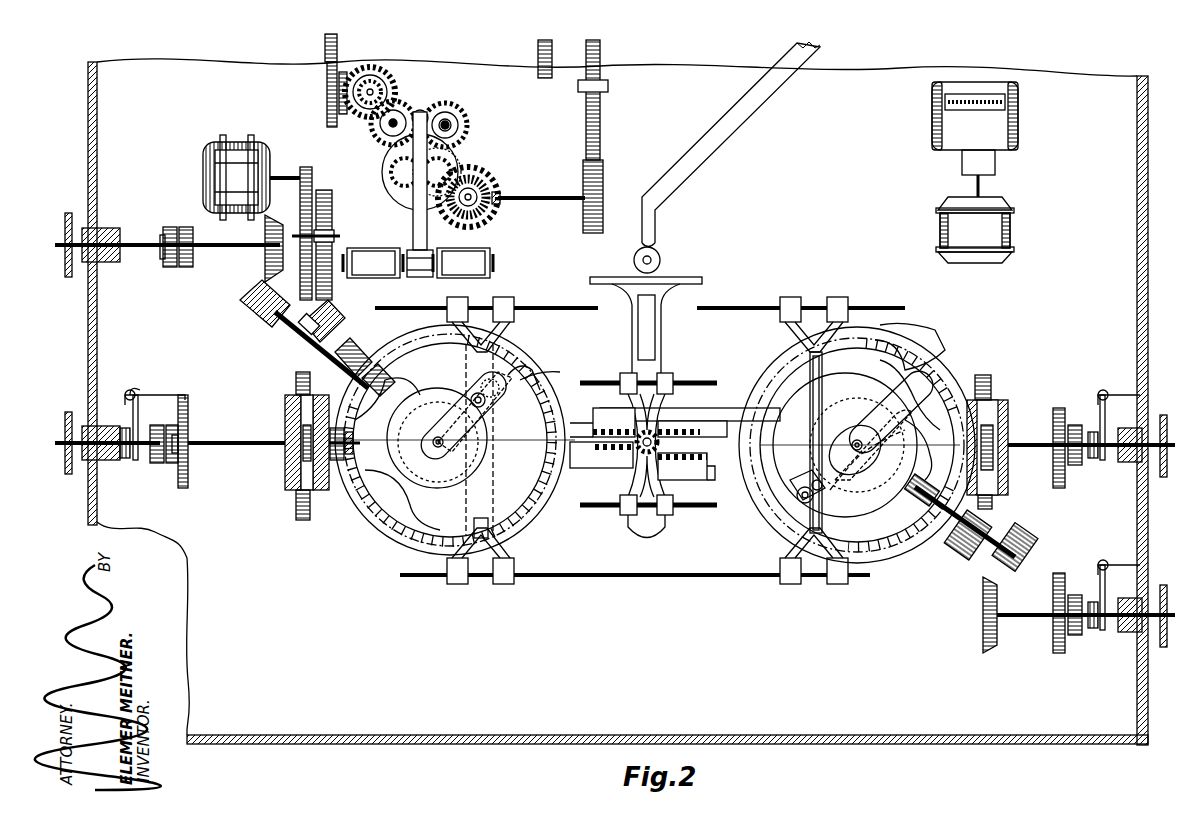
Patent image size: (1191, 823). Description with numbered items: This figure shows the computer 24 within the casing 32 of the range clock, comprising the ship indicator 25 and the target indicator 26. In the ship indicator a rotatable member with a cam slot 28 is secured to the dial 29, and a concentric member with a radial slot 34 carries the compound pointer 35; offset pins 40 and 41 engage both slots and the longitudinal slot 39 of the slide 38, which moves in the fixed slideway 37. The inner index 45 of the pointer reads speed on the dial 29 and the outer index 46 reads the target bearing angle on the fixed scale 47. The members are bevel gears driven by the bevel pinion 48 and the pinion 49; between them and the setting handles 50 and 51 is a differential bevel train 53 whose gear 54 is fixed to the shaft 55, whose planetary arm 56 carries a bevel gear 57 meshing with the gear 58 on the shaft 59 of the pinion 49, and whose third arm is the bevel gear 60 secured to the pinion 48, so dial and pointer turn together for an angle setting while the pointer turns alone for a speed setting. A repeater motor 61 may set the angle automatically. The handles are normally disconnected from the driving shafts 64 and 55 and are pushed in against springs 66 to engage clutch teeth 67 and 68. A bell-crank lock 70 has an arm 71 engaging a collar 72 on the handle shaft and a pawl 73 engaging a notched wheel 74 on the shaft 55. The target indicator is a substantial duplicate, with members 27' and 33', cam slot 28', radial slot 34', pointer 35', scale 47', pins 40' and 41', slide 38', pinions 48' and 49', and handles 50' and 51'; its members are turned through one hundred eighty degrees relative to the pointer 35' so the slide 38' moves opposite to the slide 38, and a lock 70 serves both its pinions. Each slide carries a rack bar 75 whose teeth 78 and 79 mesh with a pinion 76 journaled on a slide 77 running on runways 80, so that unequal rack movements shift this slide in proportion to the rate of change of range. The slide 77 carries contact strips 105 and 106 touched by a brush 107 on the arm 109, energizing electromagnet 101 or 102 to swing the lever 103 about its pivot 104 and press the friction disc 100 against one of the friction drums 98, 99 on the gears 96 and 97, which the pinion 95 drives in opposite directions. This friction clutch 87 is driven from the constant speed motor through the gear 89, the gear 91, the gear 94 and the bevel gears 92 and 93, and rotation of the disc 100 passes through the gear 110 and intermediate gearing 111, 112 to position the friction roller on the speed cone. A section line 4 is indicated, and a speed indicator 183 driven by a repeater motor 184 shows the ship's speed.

The section line 4 is at (575, 430).
The computer 24 is at (646, 477).
The indicator 25 is at (520, 368).
The indicator 26 is at (935, 345).
The member 27' is at (910, 401).
The cam slot 28 is at (455, 444).
The cam slot 28' is at (845, 445).
The dial 29 is at (498, 432).
The casing 32 is at (445, 735).
The member 33' is at (867, 460).
The radial slot 34 is at (458, 415).
The radial slot 34' is at (860, 442).
The pointer 35 is at (468, 405).
The pointer 35' is at (891, 411).
The slideway 37 is at (547, 306).
The slide 38 is at (495, 440).
The slide 38' is at (816, 453).
The longitudinal slot 39 is at (474, 535).
The pin 40 is at (506, 402).
The pin 40' is at (873, 453).
The pin 41 is at (504, 399).
The pin 41' is at (828, 501).
The inner index 45 is at (530, 384).
The outer index 46 is at (522, 358).
The fixed scale 47 is at (460, 441).
The fixed scale 47' is at (884, 445).
The bevel pinion 48 is at (344, 429).
The bevel pinion 48' is at (960, 512).
The pinion 49 is at (383, 370).
The pinion 49' is at (968, 540).
The setting handle 50 is at (164, 231).
The setting handle 50' is at (1082, 615).
The setting handle 51 is at (102, 430).
The setting handle 51' is at (1094, 447).
The differential bevel train 53 is at (283, 440).
The gear 54 is at (290, 422).
The shaft 55 is at (243, 450).
The planetary arm 56 is at (318, 505).
The bevel gear 57 is at (303, 512).
The gear 58 is at (352, 322).
The shaft 59 is at (360, 364).
The bevel gear 60 is at (340, 490).
The repeater motor 61 is at (262, 155).
The driving shaft 64 is at (236, 250).
The spring 66 is at (108, 262).
The clutch teeth 67 is at (178, 266).
The clutch teeth 68 is at (185, 227).
The lock 70 is at (140, 390).
The arm 71 is at (136, 427).
The collar 72 is at (126, 427).
The pawl 73 is at (188, 393).
The notched wheel 74 is at (190, 416).
The rack bar 75 is at (596, 432).
The pinion 76 is at (682, 437).
The slide 77 is at (665, 409).
The teeth 78 is at (601, 455).
The teeth 79 is at (700, 455).
The runways 80 is at (693, 384).
The friction clutch 87 is at (420, 140).
The gear 89 is at (538, 48).
The gear 91 is at (325, 42).
The bevel gear 92 is at (336, 109).
The bevel gear 93 is at (385, 74).
The gear 94 is at (327, 97).
The pinion 95 is at (385, 88).
The gear 96 is at (390, 136).
The gear 97 is at (468, 126).
The friction drum 98 is at (410, 117).
The friction drum 99 is at (465, 112).
The friction disc 100 is at (395, 202).
The electromagnet 101 is at (380, 250).
The electromagnet 102 is at (475, 250).
The lever 103 is at (413, 218).
The pivot 104 is at (427, 113).
The contact strip 105 is at (622, 284).
The contact strip 106 is at (682, 277).
The brush 107 is at (660, 255).
The arm 109 is at (722, 135).
The gear 110 is at (460, 151).
The intermediate gearing 111 is at (505, 190).
The intermediate gearing 112 is at (600, 130).
The speed indicator 183 is at (975, 139).
The repeater motor 184 is at (975, 230).